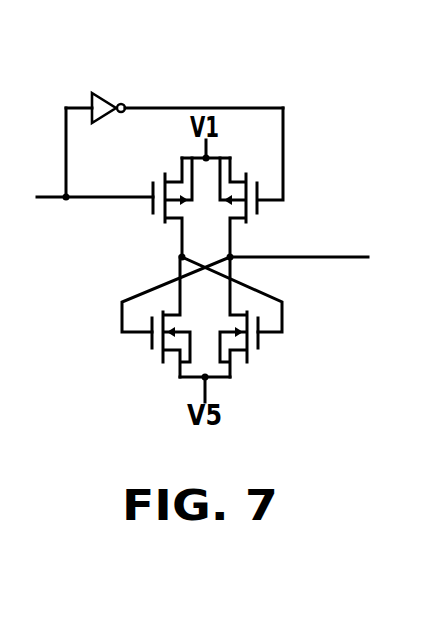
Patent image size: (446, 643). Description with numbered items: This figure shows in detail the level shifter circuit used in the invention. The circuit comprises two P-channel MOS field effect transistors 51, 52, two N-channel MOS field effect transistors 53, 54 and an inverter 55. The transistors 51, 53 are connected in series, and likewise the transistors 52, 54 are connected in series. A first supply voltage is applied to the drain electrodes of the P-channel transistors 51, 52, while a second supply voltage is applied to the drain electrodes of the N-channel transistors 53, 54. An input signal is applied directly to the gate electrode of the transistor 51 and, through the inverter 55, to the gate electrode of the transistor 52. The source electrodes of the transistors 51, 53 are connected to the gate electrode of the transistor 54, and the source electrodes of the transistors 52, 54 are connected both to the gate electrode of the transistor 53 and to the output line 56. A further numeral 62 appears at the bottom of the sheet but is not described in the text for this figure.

The P-channel MOS field effect transistor 51 is at (163, 178).
The P-channel MOS field effect transistor 52 is at (247, 177).
The N-channel MOS field effect transistor 53 is at (152, 358).
The N-channel MOS field effect transistor 54 is at (262, 358).
The inverter 55 is at (97, 92).
The output line 56 is at (312, 256).
The reference numeral 62 is at (178, 642).